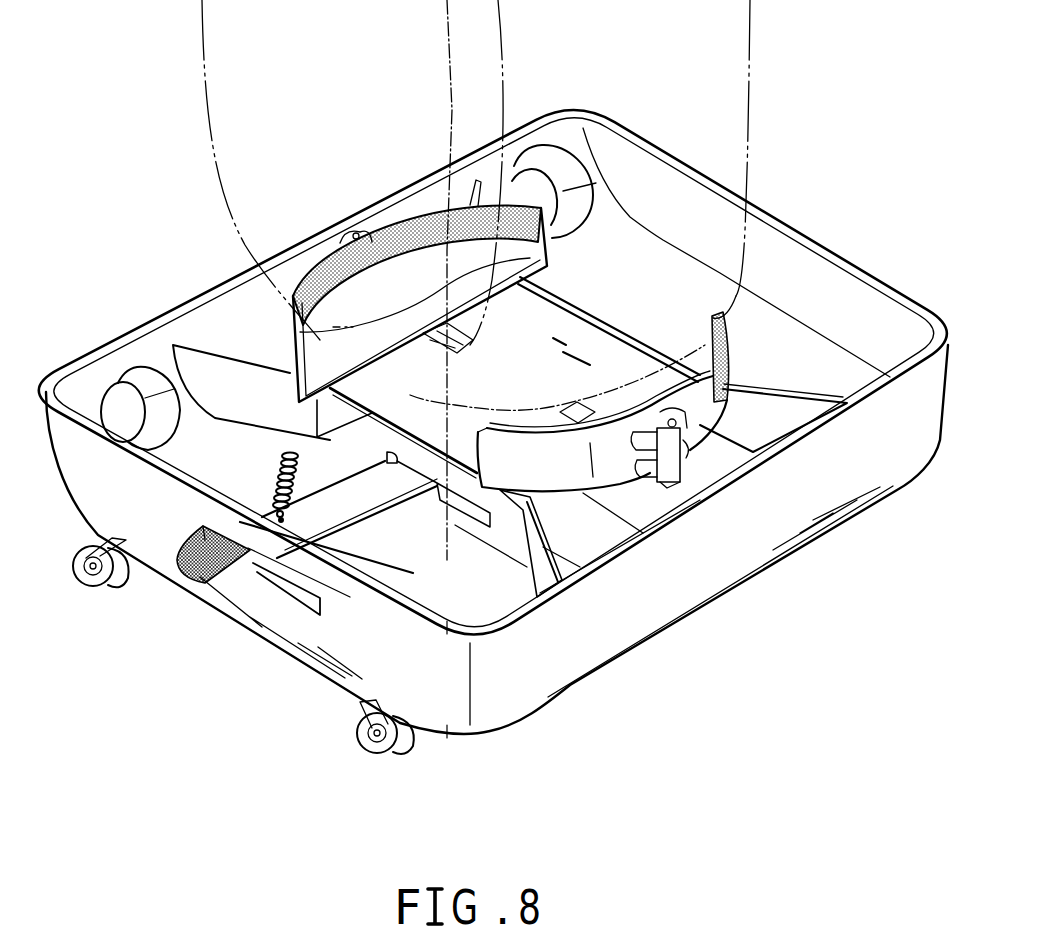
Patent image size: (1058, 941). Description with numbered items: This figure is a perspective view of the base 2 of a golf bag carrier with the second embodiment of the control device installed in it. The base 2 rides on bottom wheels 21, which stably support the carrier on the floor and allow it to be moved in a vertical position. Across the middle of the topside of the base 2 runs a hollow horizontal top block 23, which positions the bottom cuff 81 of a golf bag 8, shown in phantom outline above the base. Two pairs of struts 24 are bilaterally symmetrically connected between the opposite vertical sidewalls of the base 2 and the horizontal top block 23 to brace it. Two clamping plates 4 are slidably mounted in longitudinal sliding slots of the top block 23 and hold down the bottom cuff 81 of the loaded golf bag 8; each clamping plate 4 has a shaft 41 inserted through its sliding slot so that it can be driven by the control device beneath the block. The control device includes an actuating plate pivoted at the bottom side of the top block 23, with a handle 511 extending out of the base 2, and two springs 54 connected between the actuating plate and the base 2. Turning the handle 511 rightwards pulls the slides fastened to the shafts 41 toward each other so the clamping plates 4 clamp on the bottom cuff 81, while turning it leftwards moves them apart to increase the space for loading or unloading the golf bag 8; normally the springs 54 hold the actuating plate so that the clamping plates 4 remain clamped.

The base 2 is at (137, 328).
The bottom wheels 21 is at (100, 585).
The horizontal top block 23 is at (523, 340).
The struts 24 is at (227, 367).
The clamping plates 4 is at (733, 367).
The shaft 41 is at (670, 460).
The springs 54 is at (275, 479).
The handle 511 is at (195, 582).
The golf bag 8 is at (733, 141).
The bottom cuff 81 is at (420, 442).